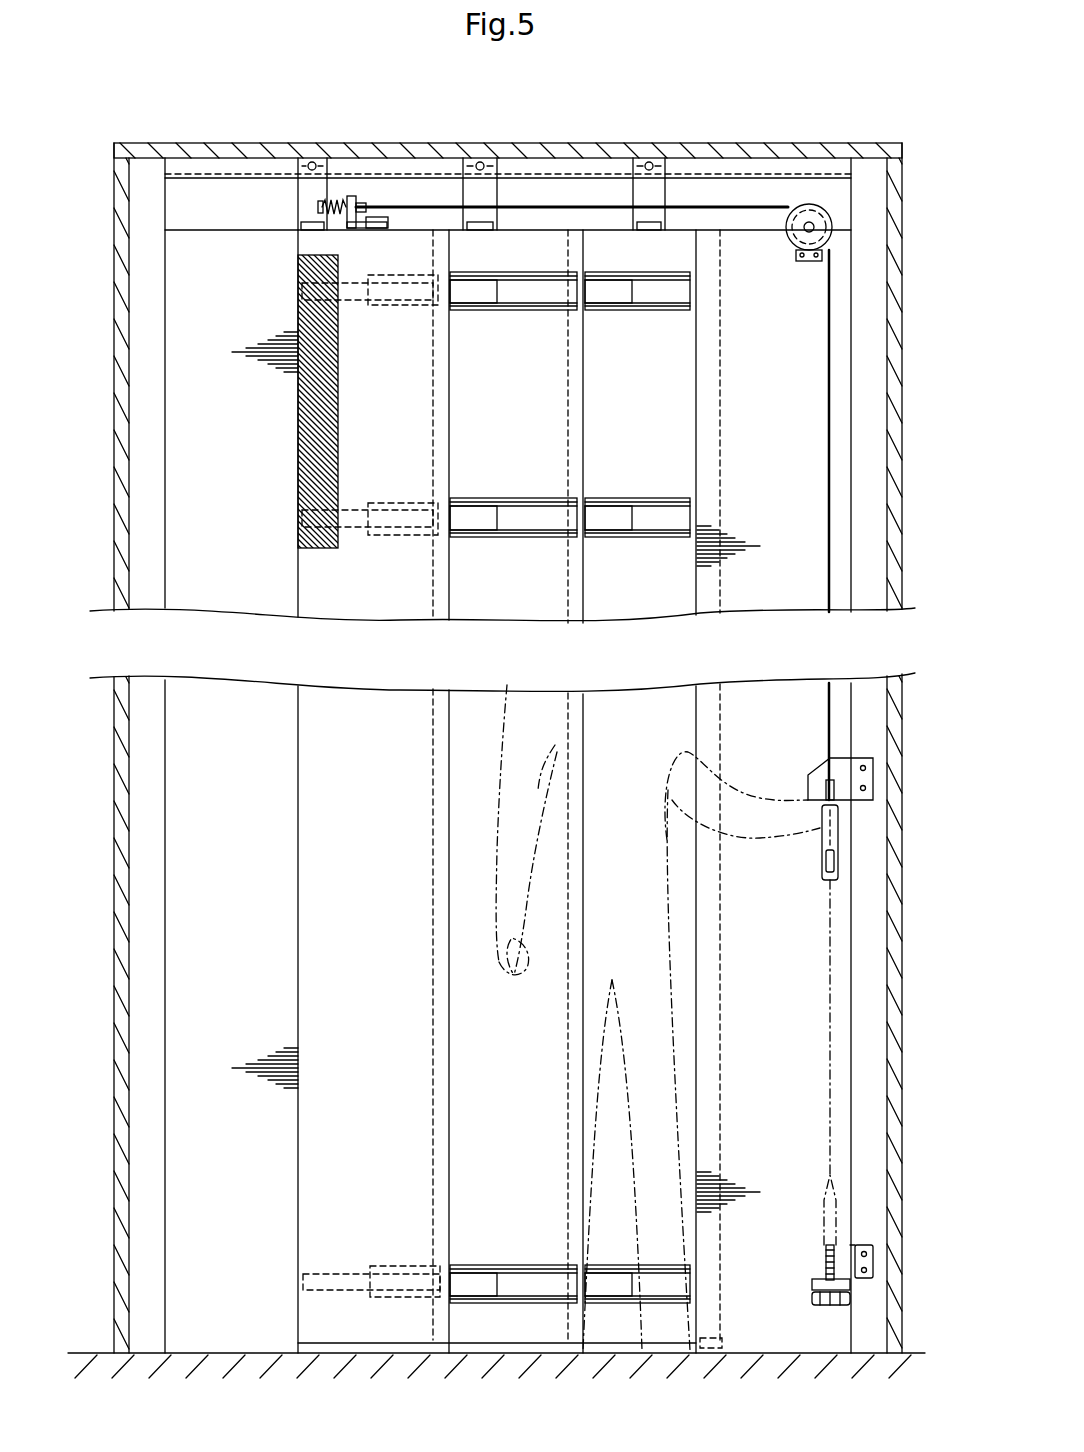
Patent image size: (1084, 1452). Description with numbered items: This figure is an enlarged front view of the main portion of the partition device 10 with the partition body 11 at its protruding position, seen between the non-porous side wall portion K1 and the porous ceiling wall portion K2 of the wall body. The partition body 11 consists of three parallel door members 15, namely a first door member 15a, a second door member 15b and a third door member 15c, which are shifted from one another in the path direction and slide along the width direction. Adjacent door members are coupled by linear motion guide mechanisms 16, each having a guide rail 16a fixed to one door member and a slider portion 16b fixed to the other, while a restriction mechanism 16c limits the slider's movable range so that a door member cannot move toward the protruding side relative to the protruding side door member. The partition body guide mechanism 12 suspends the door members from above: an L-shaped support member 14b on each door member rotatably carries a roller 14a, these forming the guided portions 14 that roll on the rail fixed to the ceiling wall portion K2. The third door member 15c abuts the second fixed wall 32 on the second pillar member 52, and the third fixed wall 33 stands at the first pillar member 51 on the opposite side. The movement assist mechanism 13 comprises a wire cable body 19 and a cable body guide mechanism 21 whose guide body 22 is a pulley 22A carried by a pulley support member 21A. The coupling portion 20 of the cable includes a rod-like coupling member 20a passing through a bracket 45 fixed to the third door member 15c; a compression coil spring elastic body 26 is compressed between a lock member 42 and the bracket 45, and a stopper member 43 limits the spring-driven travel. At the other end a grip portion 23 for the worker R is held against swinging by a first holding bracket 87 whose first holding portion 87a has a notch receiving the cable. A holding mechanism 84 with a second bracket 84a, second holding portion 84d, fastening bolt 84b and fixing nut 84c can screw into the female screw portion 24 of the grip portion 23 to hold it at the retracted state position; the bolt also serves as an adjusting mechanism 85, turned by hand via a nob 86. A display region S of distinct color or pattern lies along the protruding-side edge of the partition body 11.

The partition device 10 is at (496, 723).
The partition body 11 is at (391, 784).
The partition body guide mechanism 12 is at (95, 110).
The movement assist mechanism 13 is at (826, 200).
The guided portion 14 is at (435, 168).
The roller 14a is at (306, 165).
The support member 14b is at (304, 226).
The door member 15 is at (391, 784).
The first door member 15a is at (642, 582).
The second door member 15b is at (510, 582).
The third door member 15c is at (369, 784).
The linear motion guide mechanism 16 is at (570, 787).
The guide rail 16a is at (532, 288).
The slider portion 16b is at (464, 288).
The restriction mechanism 16c is at (513, 404).
The cable body 19 is at (826, 318).
The coupling portion 20 is at (390, 164).
The coupling member 20a is at (354, 196).
The cable body guide mechanism 21 is at (781, 286).
The pulley support member 21A is at (808, 262).
The guide body 22 is at (526, 174).
The pulley 22A is at (824, 200).
The grip portion 23 is at (823, 832).
The female screw portion 24 is at (826, 872).
The elastic body 26 is at (342, 198).
The second fixed wall 32 is at (140, 455).
The third fixed wall 33 is at (868, 458).
The lock member 42 is at (320, 206).
The stopper member 43 is at (368, 204).
The bracket 45 is at (378, 228).
The first pillar member 51 is at (836, 566).
The second pillar member 52 is at (172, 565).
The holding mechanism 84 is at (842, 1232).
The second bracket 84a is at (874, 1272).
The fastening bolt 84b is at (826, 1252).
The fixing nut 84c is at (812, 1283).
The second holding portion 84d is at (862, 1246).
The adjusting mechanism 85 is at (806, 1290).
The nob 86 is at (828, 1306).
The first holding bracket 87 is at (854, 755).
The first holding portion 87a is at (822, 790).
The side wall portion K1 is at (128, 850).
The ceiling wall portion K2 is at (190, 152).
The display region S is at (340, 362).
The worker R is at (522, 1010).